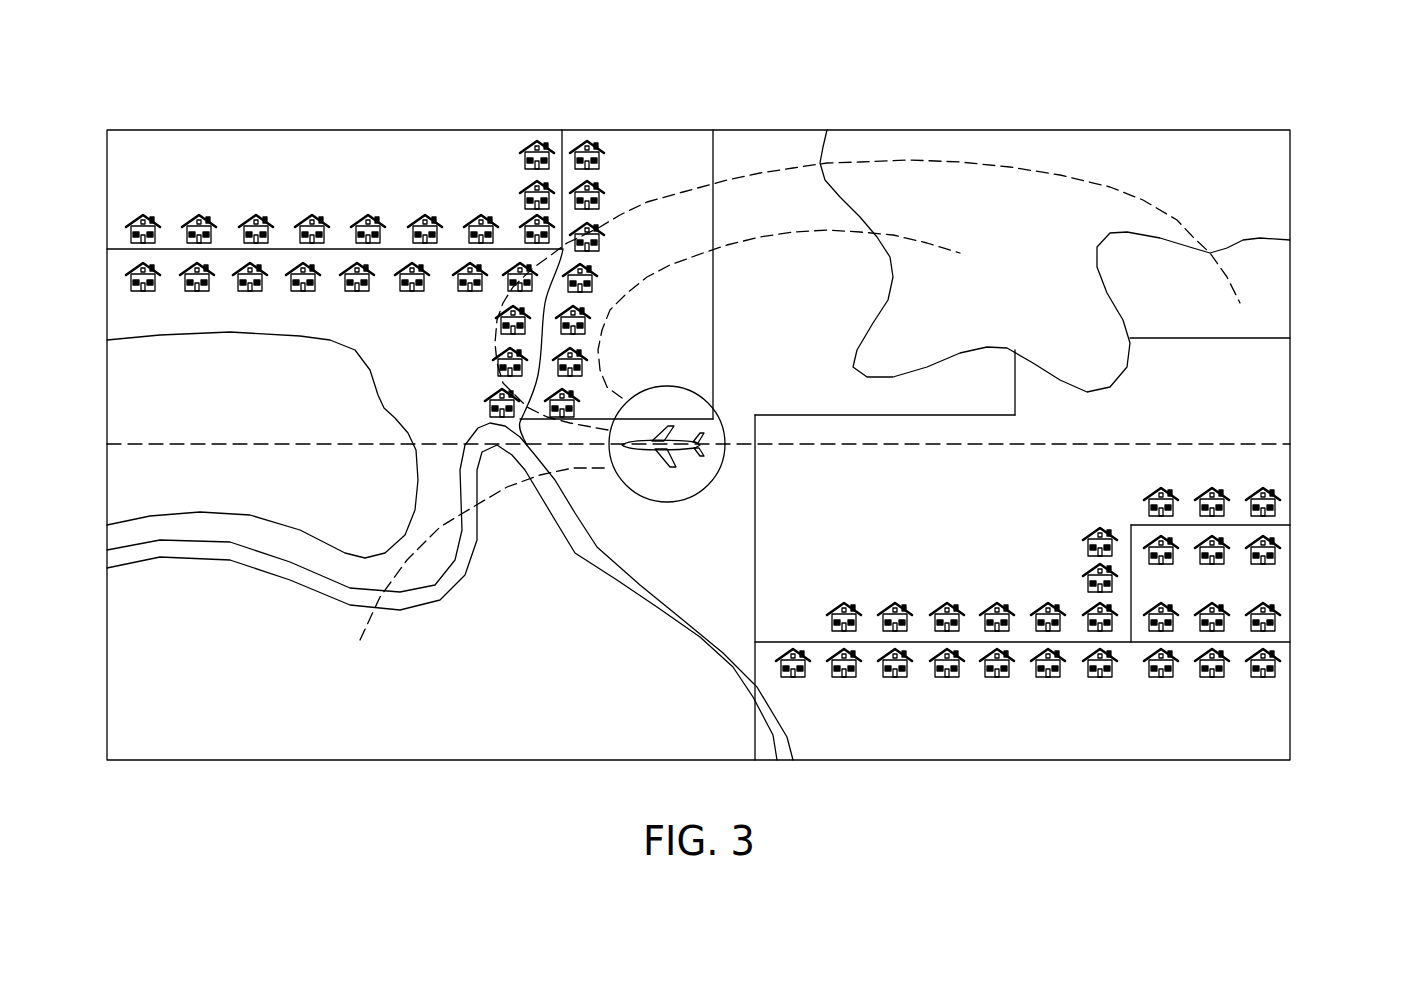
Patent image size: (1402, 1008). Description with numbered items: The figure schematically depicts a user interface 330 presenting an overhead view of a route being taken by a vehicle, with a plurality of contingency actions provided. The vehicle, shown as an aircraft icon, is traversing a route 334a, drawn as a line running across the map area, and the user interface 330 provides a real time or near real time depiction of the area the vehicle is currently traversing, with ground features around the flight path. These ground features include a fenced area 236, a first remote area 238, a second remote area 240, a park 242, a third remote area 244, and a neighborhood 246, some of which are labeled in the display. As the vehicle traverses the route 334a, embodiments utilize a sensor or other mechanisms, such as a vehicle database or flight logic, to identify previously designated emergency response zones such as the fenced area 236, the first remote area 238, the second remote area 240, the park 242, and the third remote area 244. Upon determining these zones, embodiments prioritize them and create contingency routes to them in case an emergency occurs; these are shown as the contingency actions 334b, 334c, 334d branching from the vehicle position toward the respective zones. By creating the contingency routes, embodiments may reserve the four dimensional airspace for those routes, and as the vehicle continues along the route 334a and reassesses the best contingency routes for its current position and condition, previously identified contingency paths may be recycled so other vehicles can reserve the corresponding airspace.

The user interface 330 is at (1165, 130).
The third remote area 244 is at (273, 157).
The second remote area 240 is at (775, 130).
The first remote area 238 is at (1277, 282).
The fenced area 236 is at (130, 383).
The park 242 is at (277, 728).
The neighborhood 246 is at (1300, 463).
The route 334a is at (1168, 433).
The contingency action 334b is at (512, 490).
The contingency action 334c is at (800, 235).
The contingency action 334d is at (1173, 222).